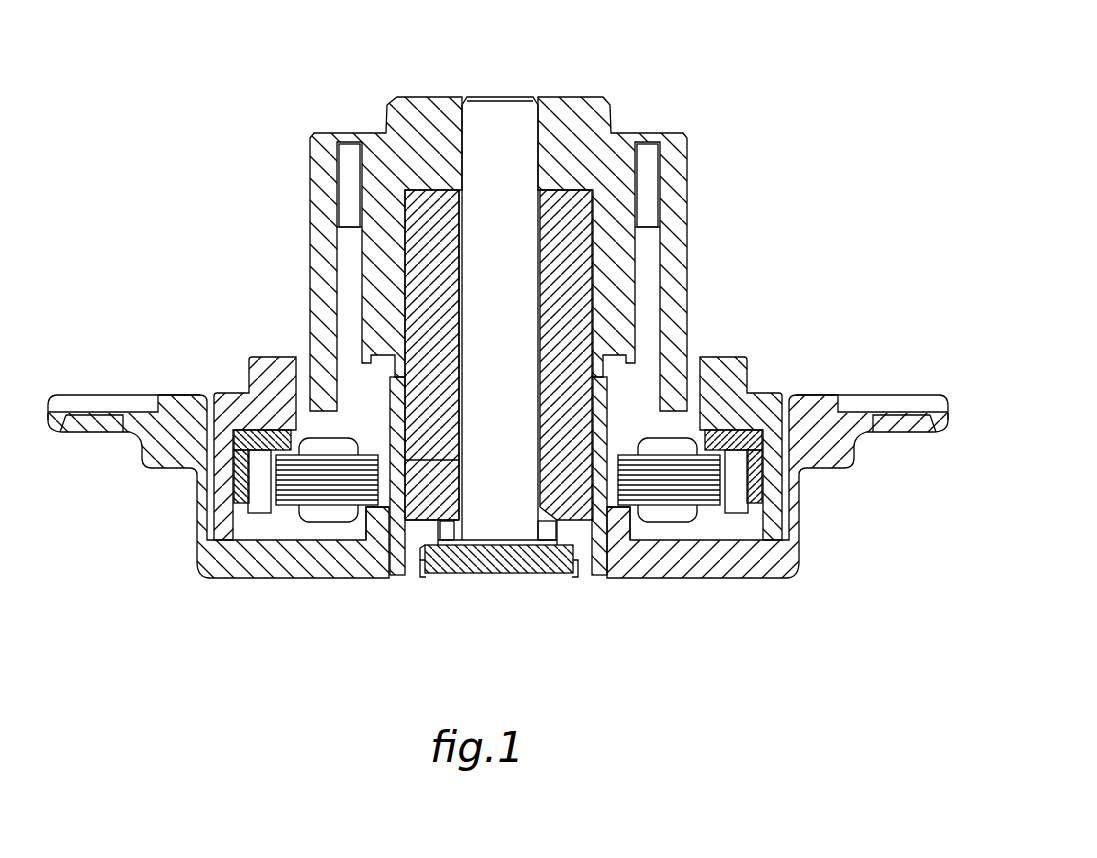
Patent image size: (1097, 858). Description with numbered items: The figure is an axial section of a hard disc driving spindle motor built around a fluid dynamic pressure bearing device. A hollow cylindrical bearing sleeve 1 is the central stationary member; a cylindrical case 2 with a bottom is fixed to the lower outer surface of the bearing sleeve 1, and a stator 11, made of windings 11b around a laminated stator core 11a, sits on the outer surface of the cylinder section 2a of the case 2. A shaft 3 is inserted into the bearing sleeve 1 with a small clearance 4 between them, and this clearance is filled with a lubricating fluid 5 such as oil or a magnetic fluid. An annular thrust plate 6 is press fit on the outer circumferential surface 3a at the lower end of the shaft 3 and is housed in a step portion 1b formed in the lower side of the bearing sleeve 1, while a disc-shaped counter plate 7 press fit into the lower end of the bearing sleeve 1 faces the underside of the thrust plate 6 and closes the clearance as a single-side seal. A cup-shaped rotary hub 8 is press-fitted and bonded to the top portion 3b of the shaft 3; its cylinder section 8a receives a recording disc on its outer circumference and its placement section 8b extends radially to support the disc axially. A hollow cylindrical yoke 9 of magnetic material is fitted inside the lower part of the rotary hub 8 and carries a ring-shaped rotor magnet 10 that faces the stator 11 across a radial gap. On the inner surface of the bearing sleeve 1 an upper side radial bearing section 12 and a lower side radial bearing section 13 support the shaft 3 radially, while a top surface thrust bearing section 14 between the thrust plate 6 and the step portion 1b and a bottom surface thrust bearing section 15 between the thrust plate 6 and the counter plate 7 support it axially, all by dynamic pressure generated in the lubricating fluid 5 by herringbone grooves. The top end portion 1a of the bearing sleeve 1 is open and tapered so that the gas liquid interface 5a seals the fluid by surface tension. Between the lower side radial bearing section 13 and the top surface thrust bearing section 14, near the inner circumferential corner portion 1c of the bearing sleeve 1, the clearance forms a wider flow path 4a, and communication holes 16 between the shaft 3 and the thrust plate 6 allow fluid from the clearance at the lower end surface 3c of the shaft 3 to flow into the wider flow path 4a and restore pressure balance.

The bearing sleeve 1 is at (530, 382).
The top end portion 1a is at (440, 190).
The step portion 1b is at (605, 510).
The inner circumferential corner portion 1c is at (628, 392).
The case 2 is at (498, 543).
The cylinder section 2a is at (388, 495).
The shaft 3 is at (538, 380).
The outer circumferential surface 3a is at (492, 545).
The top portion 3b is at (518, 145).
The lower end surface 3c is at (512, 637).
The small clearance 4 is at (405, 364).
The wider flow path 4a is at (452, 512).
The lubricating fluid 5 is at (405, 356).
The gas liquid interface 5a is at (457, 210).
The thrust plate 6 is at (445, 548).
The counter plate 7 is at (512, 552).
The rotary hub 8 is at (523, 301).
The cylinder section 8a is at (683, 237).
The placement section 8b is at (730, 363).
The yoke 9 is at (737, 503).
The rotor magnet 10 is at (750, 480).
The stator 11 is at (448, 577).
The stator core 11a is at (328, 518).
The windings 11b is at (298, 497).
The upper side radial bearing section 12 is at (460, 290).
The lower side radial bearing section 13 is at (455, 468).
The top surface thrust bearing section 14 is at (573, 505).
The bottom surface thrust bearing section 15 is at (552, 540).
The communication holes 16 is at (455, 527).